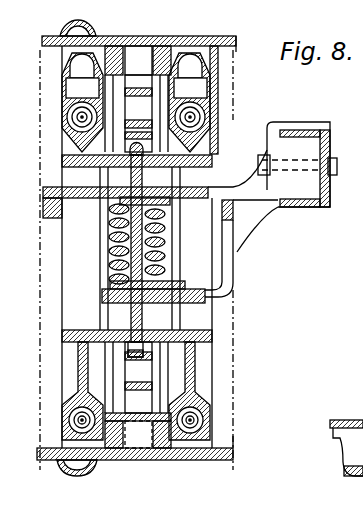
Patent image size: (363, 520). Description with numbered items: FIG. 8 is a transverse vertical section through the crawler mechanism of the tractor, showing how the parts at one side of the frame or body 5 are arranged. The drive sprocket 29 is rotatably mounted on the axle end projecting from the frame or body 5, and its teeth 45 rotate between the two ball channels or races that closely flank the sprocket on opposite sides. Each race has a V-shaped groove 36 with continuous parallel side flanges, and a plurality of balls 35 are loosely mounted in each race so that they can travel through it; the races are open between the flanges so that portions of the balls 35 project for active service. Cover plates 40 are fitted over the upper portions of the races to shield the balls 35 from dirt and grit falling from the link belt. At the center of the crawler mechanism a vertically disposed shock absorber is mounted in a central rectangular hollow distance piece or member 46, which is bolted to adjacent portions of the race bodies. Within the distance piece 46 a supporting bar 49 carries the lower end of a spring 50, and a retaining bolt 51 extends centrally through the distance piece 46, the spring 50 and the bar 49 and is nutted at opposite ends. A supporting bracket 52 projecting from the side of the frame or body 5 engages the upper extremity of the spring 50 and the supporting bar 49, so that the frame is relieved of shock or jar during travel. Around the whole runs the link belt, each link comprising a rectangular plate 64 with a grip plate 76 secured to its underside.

The frame or body 5 is at (306, 204).
The drive sprocket 29 is at (130, 97).
The balls 35 is at (220, 112).
The V-shaped groove 36 is at (62, 118).
The cover plates 40 is at (198, 100).
The teeth 45 is at (197, 34).
The distance piece or member 46 is at (110, 233).
The supporting bar 49 is at (103, 285).
The spring 50 is at (170, 228).
The retaining bolt 51 is at (131, 313).
The supporting bracket 52 is at (82, 186).
The rectangular plate 64 is at (226, 44).
The grip plate 76 is at (68, 32).